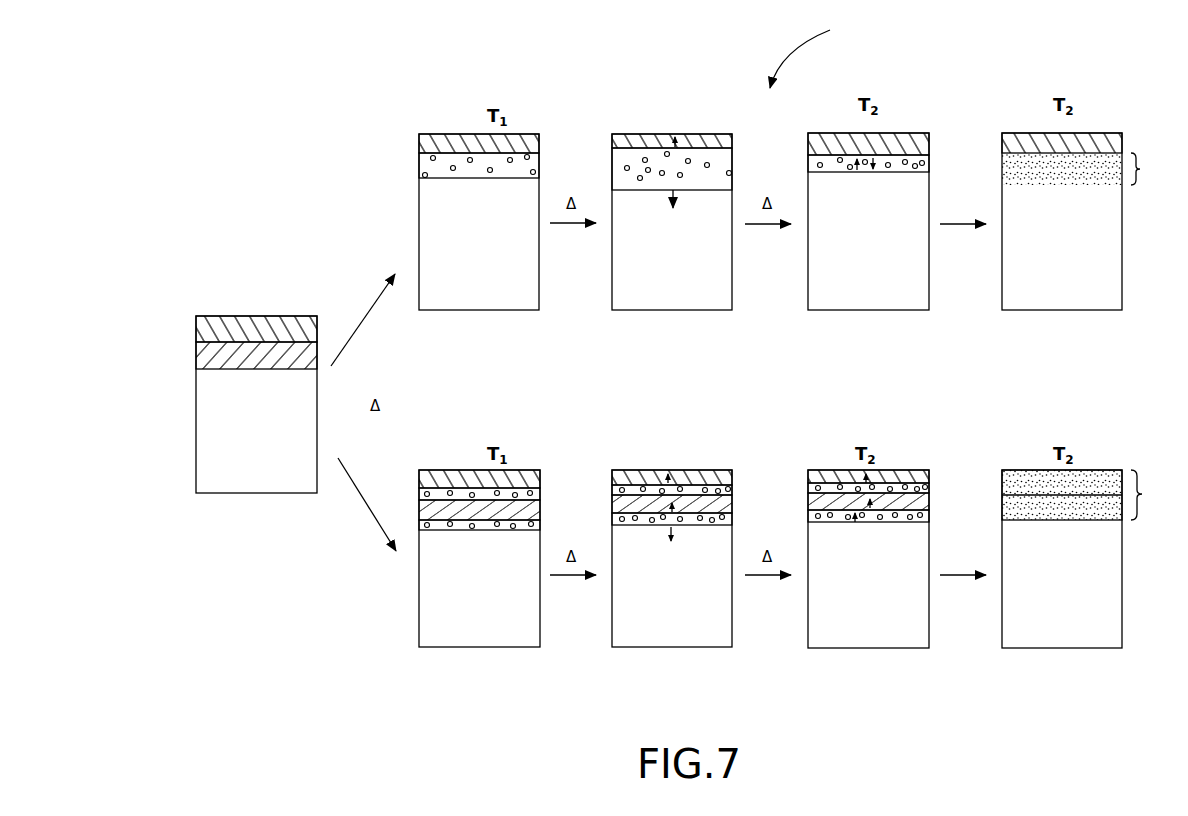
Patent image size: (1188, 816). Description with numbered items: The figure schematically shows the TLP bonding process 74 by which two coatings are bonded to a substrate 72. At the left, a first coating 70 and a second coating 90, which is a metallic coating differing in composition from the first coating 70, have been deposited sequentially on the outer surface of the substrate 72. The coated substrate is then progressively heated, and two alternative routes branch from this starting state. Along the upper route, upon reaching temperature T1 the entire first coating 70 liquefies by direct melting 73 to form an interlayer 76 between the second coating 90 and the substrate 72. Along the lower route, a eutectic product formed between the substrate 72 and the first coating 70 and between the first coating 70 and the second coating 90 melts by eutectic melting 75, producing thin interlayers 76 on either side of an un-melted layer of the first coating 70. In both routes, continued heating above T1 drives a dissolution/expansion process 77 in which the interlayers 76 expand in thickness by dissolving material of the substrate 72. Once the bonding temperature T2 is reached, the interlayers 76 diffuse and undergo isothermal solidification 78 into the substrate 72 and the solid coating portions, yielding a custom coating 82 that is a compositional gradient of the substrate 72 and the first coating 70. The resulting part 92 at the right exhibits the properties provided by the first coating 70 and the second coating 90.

The first coating 70 is at (320, 352).
The substrate 72 is at (213, 440).
The direct melting 73 is at (360, 327).
The TLP bonding process 74 is at (820, 51).
The eutectic melting 75 is at (370, 508).
The interlayer 76 is at (532, 172).
The dissolution/expansion process 77 is at (562, 228).
The isothermal solidification 78 is at (948, 230).
The custom coating 82 is at (1088, 336).
The second coating 90 is at (250, 322).
The resulting part 92 is at (1108, 288).